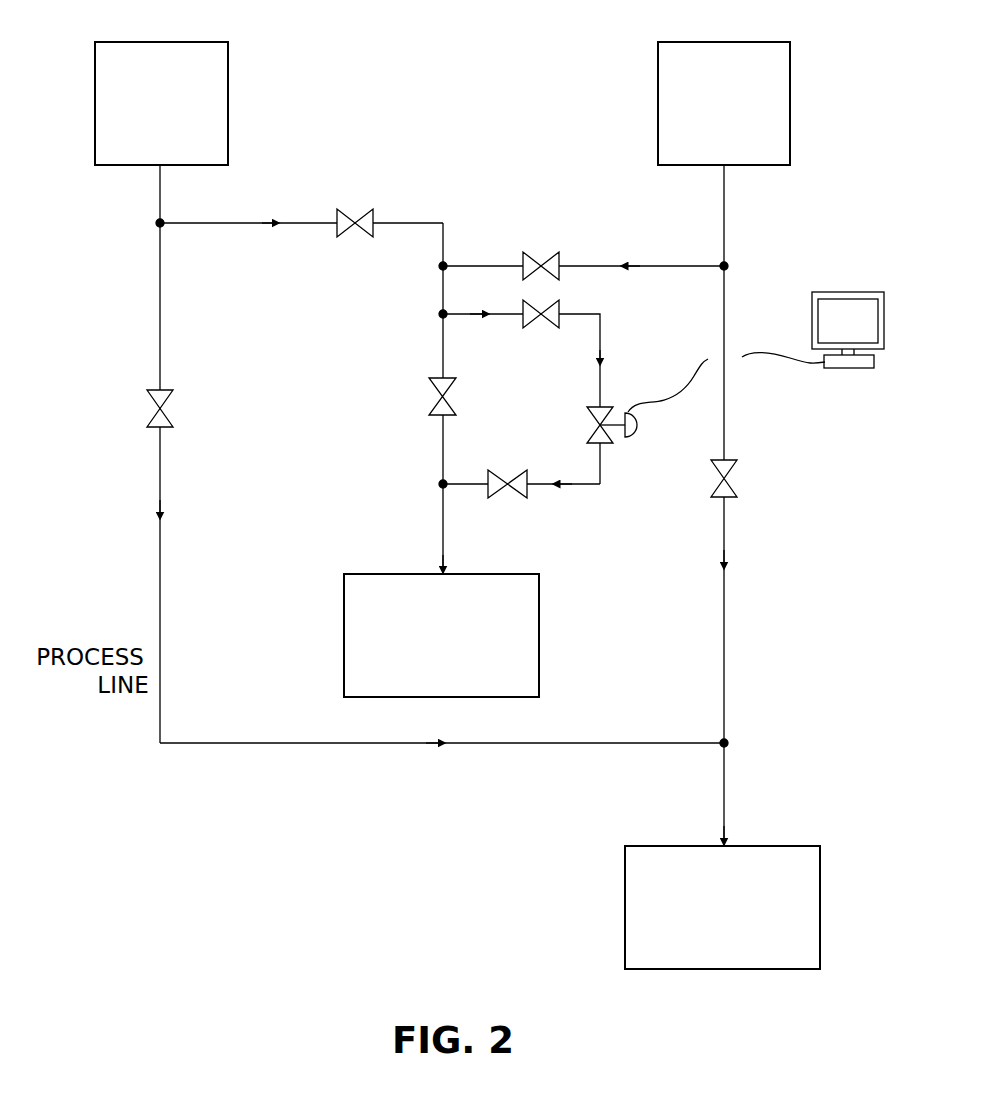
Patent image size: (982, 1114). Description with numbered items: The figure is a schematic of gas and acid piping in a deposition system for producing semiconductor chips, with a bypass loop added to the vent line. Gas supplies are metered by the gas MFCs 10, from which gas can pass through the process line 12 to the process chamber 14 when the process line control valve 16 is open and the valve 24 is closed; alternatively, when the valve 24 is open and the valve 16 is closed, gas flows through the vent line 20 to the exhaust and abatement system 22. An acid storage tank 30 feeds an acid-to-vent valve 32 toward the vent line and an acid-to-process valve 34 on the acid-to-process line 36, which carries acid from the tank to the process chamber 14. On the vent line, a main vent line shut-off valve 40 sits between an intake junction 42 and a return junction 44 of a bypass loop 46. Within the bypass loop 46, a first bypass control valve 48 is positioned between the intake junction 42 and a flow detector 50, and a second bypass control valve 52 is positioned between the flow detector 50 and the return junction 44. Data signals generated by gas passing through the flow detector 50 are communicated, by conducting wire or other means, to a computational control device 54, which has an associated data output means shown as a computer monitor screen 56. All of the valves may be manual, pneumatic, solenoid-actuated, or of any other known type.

The gas MFCs 10 is at (658, 100).
The process line 12 is at (725, 600).
The process chamber 14 is at (625, 906).
The process line control valve 16 is at (733, 478).
The vent line 20 is at (443, 278).
The exhaust and abatement system 22 is at (344, 631).
The valve 24 is at (541, 254).
The acid storage tank 30 is at (95, 100).
The acid-to-vent valve 32 is at (355, 212).
The acid-to-process valve 34 is at (155, 408).
The acid-to-process line 36 is at (352, 743).
The main vent line shut-off valve 40 is at (434, 399).
The intake junction 42 is at (441, 314).
The return junction 44 is at (441, 484).
The bypass loop 46 is at (602, 330).
The first bypass control valve 48 is at (541, 329).
The flow detector 50 is at (607, 440).
The second bypass control valve 52 is at (509, 471).
The computational control device 54 is at (850, 368).
The computer monitor screen 56 is at (846, 292).